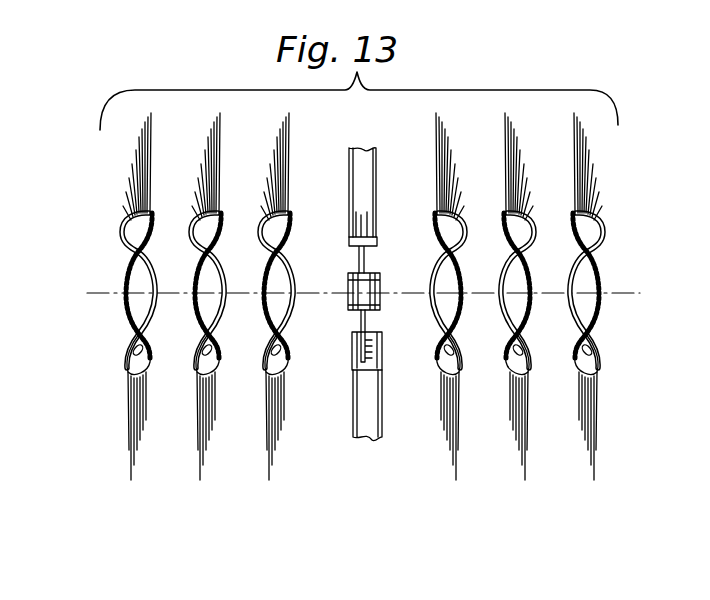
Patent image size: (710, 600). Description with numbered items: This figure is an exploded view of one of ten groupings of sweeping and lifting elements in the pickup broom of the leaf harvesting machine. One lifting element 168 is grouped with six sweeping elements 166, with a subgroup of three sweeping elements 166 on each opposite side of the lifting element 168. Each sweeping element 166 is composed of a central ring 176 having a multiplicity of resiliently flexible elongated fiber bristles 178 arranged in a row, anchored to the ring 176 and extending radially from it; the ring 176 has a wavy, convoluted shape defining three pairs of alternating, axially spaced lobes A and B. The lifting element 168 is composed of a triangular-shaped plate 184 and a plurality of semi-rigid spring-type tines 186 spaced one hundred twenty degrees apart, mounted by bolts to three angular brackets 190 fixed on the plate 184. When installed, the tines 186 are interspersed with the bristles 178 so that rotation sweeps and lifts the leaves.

The sweeping element 166 is at (359, 316).
The lifting element 168 is at (377, 305).
The central ring 176 is at (287, 256).
The fiber bristles 178 is at (132, 163).
The triangular-shaped plate 184 is at (368, 325).
The tines 186 is at (355, 148).
The angular brackets 190 is at (384, 250).